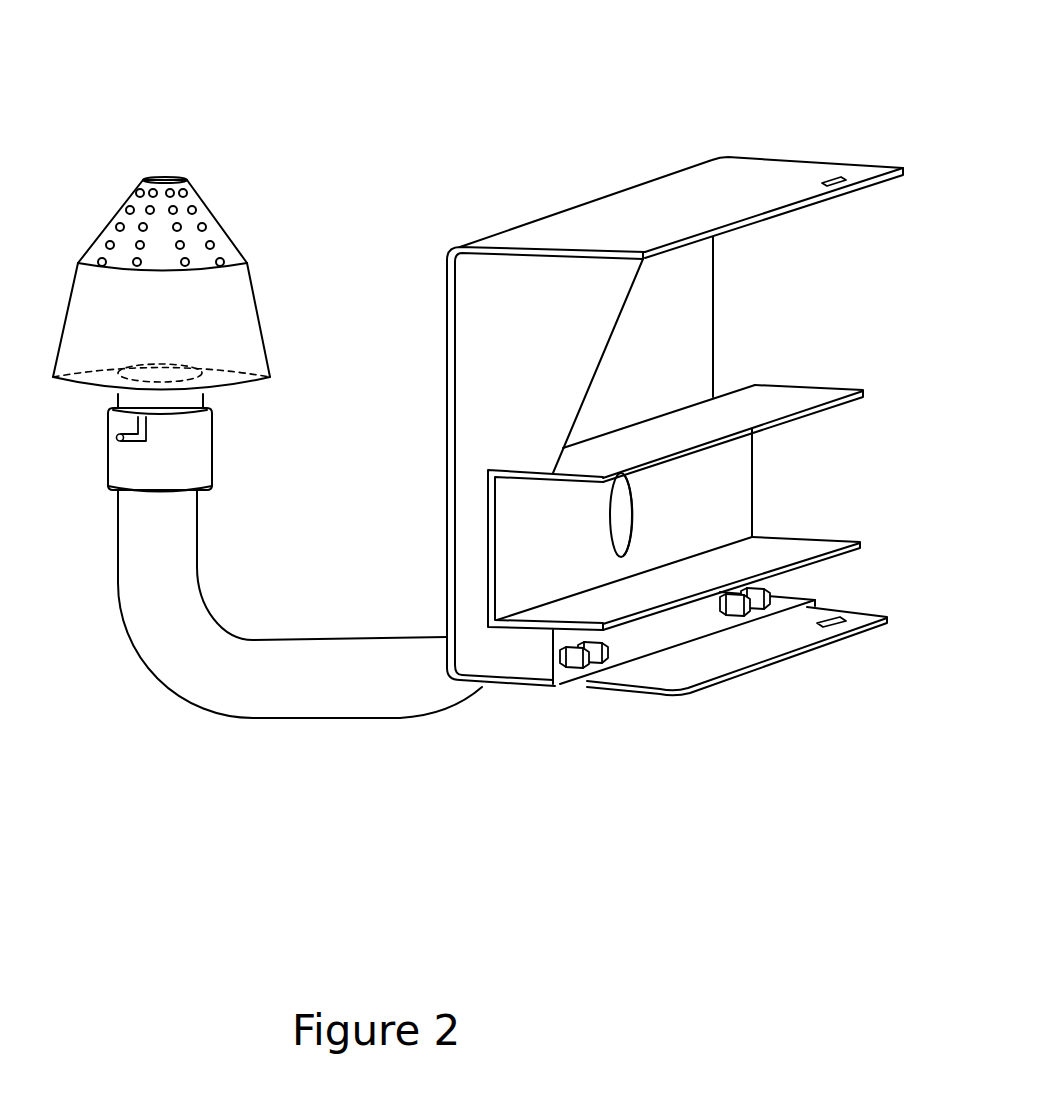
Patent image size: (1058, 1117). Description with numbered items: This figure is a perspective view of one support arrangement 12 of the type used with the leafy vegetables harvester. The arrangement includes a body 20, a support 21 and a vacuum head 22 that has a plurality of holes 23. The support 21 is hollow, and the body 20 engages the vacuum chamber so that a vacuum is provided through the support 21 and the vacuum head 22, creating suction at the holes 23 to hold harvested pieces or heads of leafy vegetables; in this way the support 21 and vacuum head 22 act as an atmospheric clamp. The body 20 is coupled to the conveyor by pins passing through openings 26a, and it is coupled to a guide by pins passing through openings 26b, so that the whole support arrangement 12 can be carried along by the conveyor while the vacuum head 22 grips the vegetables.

The nozzle mounting assembly 12 is at (443, 98).
The body 20 is at (503, 232).
The support 21 is at (248, 701).
The vacuum head 22 is at (228, 317).
The holes 23 is at (130, 212).
The openings 26a is at (641, 681).
The openings 26b is at (664, 241).